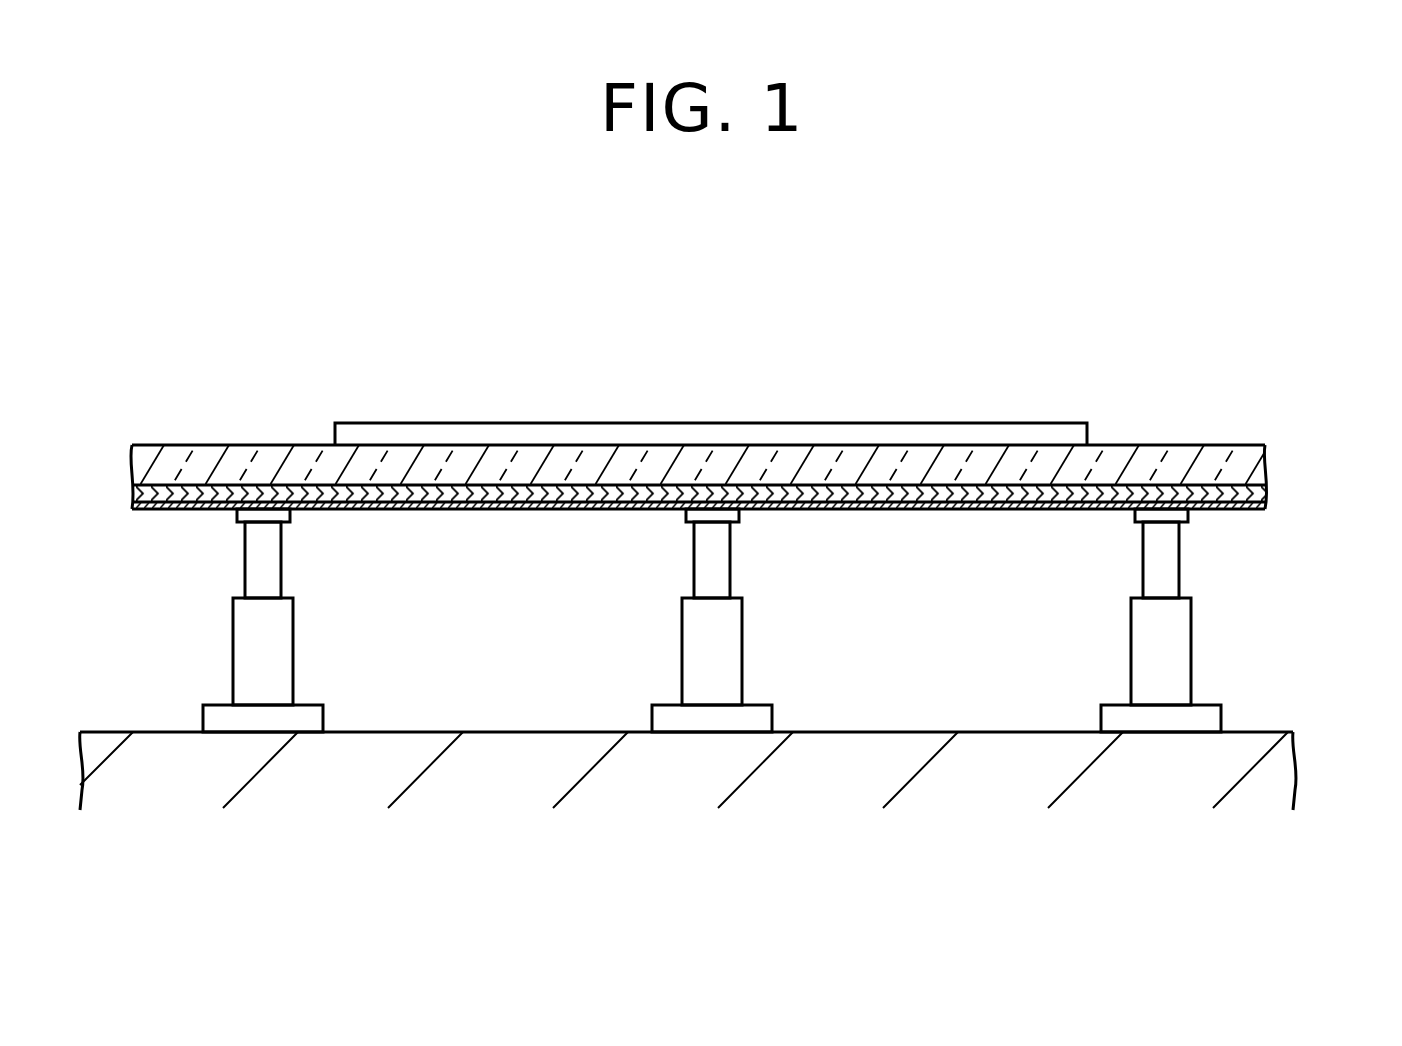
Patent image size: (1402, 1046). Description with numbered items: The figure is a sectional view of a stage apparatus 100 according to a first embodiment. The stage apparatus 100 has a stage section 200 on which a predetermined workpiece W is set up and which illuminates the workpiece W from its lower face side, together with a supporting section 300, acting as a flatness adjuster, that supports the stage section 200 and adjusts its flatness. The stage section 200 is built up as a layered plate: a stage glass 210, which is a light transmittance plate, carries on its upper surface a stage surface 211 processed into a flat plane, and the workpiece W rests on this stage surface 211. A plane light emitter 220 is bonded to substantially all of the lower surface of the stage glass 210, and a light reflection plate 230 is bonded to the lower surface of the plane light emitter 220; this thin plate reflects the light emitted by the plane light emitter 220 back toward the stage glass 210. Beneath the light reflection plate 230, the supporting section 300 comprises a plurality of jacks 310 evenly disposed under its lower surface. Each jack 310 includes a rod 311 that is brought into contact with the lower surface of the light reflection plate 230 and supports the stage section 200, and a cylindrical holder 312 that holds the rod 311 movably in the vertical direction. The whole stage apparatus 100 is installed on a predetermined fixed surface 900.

The stage apparatus 100 is at (1278, 288).
The stage section 200 is at (1292, 470).
The stage glass 210 is at (1217, 452).
The stage surface 211 is at (1130, 445).
The plane light emitter 220 is at (1267, 489).
The light reflection plate 230 is at (1243, 510).
The supporting section 300 is at (1230, 648).
The jack 310 is at (217, 638).
The rod 311 is at (1150, 563).
The cylindrical holder 312 is at (1140, 630).
The fixed surface 900 is at (1263, 732).
The workpiece W is at (350, 423).